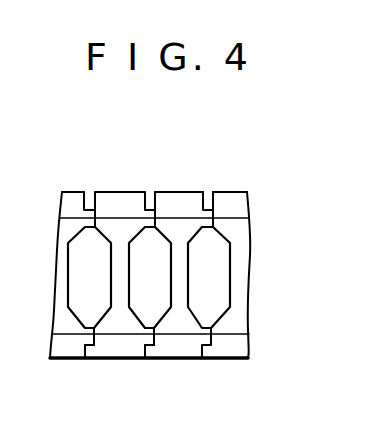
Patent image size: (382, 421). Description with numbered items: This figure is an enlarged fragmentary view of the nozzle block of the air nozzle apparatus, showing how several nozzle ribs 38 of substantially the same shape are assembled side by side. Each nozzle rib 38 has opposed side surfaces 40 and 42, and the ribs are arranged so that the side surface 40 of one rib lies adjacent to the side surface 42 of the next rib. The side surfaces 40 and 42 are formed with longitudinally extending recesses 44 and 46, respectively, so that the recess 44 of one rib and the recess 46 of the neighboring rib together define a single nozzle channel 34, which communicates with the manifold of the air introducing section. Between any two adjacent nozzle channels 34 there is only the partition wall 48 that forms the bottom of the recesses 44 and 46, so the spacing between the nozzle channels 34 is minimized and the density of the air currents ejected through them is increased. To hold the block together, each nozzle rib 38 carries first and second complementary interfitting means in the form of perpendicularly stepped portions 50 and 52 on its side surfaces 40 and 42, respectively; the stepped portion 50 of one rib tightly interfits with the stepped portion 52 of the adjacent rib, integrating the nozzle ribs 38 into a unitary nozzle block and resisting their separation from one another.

The nozzle channel 34 is at (160, 290).
The nozzle rib 38 is at (126, 201).
The side surface 40 is at (154, 344).
The side surface 42 is at (89, 344).
The recess 44 is at (153, 269).
The recess 46 is at (108, 247).
The partition wall 48 is at (120, 288).
The first stepped portion 50 is at (148, 210).
The second stepped portion 52 is at (84, 210).